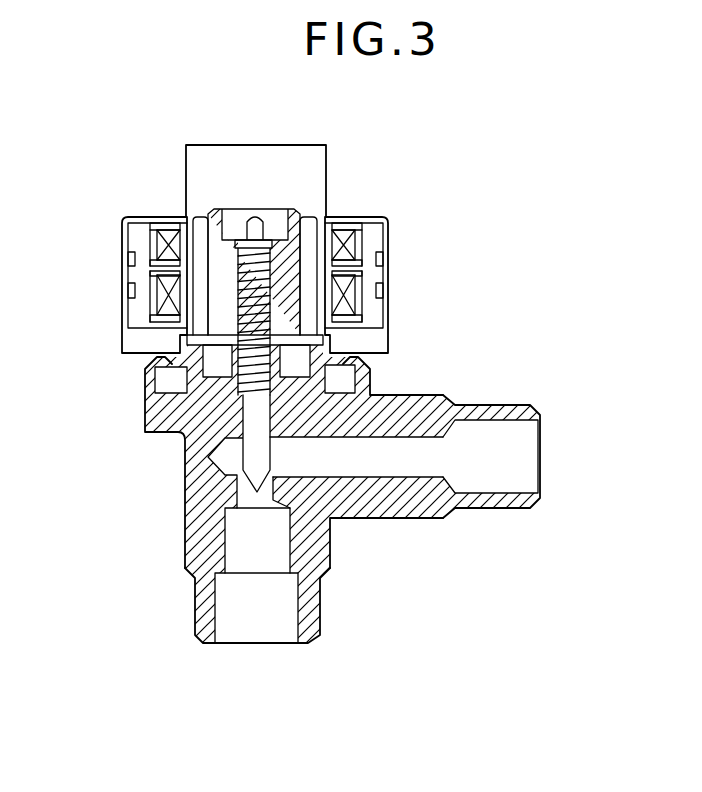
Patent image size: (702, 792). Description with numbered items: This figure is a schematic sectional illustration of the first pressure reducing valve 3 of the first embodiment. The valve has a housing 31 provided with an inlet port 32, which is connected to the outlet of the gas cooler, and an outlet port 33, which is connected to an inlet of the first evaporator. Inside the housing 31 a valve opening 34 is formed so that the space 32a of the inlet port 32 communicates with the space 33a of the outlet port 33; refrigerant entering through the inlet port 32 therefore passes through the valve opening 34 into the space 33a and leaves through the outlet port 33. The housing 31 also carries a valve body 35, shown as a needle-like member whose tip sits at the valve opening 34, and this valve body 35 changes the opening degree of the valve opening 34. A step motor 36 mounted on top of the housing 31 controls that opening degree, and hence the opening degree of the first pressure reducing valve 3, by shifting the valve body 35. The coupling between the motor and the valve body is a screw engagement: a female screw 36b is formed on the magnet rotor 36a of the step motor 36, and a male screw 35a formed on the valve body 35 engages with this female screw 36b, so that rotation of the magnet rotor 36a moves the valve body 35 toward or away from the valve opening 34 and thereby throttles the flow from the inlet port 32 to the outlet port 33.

The first pressure reducing valve 3 is at (162, 445).
The housing 31 is at (347, 521).
The inlet port 32 is at (258, 625).
The space of the inlet port 32a is at (242, 545).
The outlet port 33 is at (518, 470).
The space of the outlet port 33a is at (383, 458).
The valve opening 34 is at (248, 493).
The valve body 35 is at (330, 420).
The male screw 35a is at (268, 263).
The step motor 36 is at (372, 240).
The magnet rotor 36a is at (197, 235).
The female screw 36b is at (237, 311).